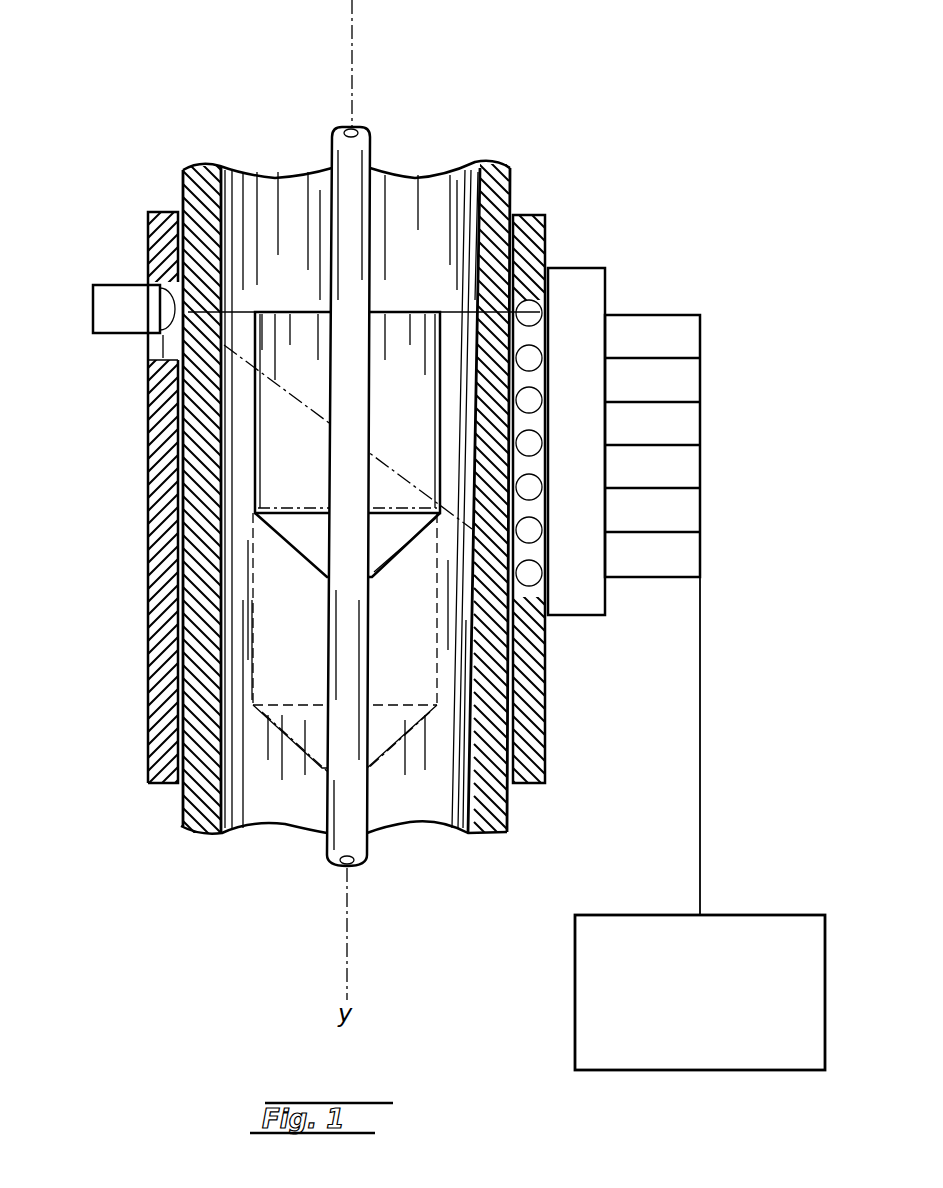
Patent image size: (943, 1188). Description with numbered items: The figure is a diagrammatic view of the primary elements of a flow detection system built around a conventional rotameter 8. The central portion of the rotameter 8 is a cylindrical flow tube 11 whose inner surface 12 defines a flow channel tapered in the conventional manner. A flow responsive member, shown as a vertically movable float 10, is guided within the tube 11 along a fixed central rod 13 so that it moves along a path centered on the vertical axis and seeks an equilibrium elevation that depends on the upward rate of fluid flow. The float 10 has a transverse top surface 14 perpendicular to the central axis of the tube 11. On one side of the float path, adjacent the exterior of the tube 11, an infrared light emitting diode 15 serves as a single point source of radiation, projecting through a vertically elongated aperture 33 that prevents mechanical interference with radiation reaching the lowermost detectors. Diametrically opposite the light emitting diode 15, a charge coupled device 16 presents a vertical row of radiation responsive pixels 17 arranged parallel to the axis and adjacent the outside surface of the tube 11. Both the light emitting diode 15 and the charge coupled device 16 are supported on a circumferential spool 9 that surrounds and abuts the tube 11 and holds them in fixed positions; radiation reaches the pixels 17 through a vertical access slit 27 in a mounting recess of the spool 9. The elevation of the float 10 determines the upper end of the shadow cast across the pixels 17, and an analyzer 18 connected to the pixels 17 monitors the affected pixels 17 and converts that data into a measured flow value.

The rotameter 8 is at (272, 157).
The circumferential spool 9 is at (535, 688).
The float 10 is at (392, 332).
The flow tube 11 is at (502, 203).
The inner surface 12 is at (480, 207).
The central rod 13 is at (358, 153).
The top surface 14 is at (305, 308).
The light emitting diode 15 is at (128, 298).
The charge coupled device 16 is at (575, 282).
The pixels 17 is at (533, 398).
The analyzer 18 is at (748, 932).
The vertical access slit 27 is at (538, 335).
The aperture 33 is at (162, 345).